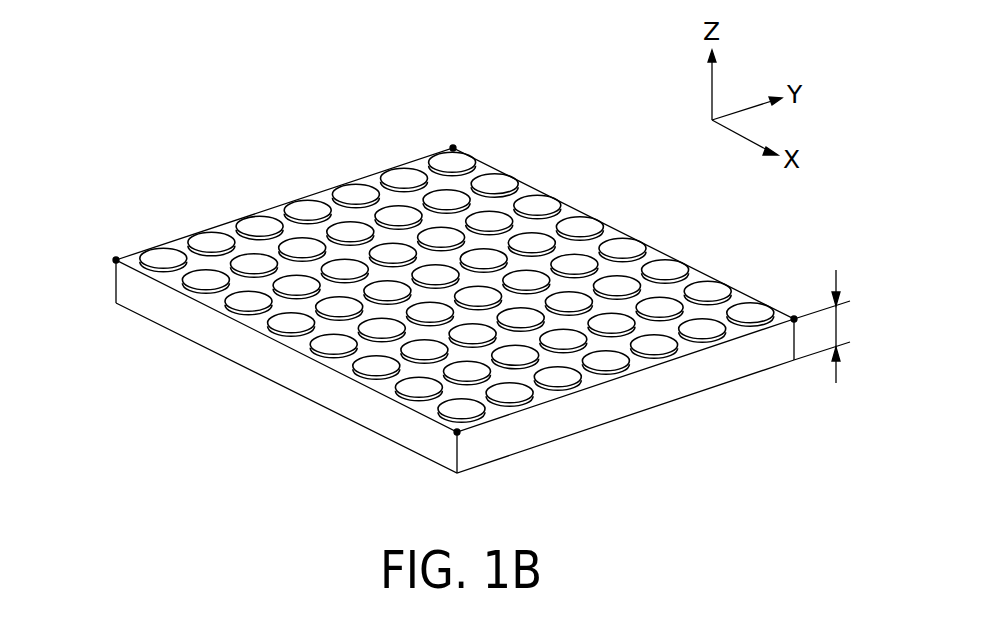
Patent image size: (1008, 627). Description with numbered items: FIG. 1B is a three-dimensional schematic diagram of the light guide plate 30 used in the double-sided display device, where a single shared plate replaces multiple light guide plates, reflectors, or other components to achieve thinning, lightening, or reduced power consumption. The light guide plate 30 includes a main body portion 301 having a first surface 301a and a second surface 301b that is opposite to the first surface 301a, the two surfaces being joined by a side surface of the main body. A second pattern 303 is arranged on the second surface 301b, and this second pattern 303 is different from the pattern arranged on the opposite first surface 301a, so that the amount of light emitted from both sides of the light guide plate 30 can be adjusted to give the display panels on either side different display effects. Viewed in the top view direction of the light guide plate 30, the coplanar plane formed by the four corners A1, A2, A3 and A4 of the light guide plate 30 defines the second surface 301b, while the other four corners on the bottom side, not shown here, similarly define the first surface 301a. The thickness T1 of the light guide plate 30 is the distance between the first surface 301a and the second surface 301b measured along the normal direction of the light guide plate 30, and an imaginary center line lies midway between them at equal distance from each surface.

The light guide plate 30 is at (197, 170).
The main body portion 301 is at (125, 282).
The first surface 301a is at (137, 313).
The second surface 301b is at (132, 260).
The second pattern 303 is at (625, 245).
The corner A1 is at (116, 260).
The corner A2 is at (457, 432).
The corner A3 is at (794, 319).
The corner A4 is at (453, 148).
The thickness T1 is at (832, 326).